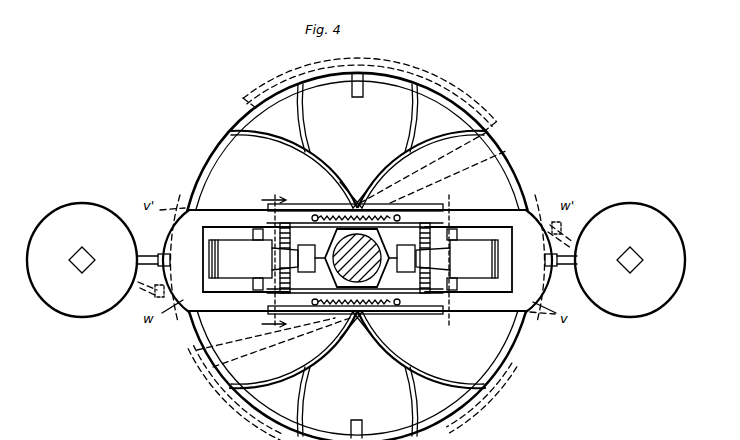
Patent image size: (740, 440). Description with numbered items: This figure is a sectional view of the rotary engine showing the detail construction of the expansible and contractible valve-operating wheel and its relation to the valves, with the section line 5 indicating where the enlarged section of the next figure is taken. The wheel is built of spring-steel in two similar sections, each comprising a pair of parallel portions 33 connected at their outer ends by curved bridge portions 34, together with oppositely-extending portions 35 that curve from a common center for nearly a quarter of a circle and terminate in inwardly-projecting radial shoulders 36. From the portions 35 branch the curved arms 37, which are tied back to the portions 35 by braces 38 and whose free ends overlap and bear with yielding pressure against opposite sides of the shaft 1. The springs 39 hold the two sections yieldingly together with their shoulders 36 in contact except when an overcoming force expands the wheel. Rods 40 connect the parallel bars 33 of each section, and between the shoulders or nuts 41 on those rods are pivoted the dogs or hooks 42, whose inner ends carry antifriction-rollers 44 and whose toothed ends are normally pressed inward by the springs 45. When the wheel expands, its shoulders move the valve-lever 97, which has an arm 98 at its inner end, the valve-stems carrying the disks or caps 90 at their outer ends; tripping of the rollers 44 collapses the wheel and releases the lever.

The shaft 1 is at (360, 260).
The screws 5 is at (355, 263).
The parallel portions 33 is at (236, 210).
The curved bridge portions 34 is at (206, 261).
The oppositely-extending portions 35 is at (256, 98).
The radial ends or shoulders 36 is at (359, 97).
The curved arms 37 is at (314, 170).
The braces 38 is at (310, 138).
The springs 39 is at (345, 196).
The rods 40 is at (258, 233).
The shoulders or nuts 41 is at (256, 283).
The dogs or hooks 42 is at (353, 259).
The antifriction-rollers 44 is at (354, 251).
The springs 45 is at (291, 281).
The disks or caps 90 is at (356, 260).
The lever 97 is at (147, 256).
The arm 98 is at (164, 254).